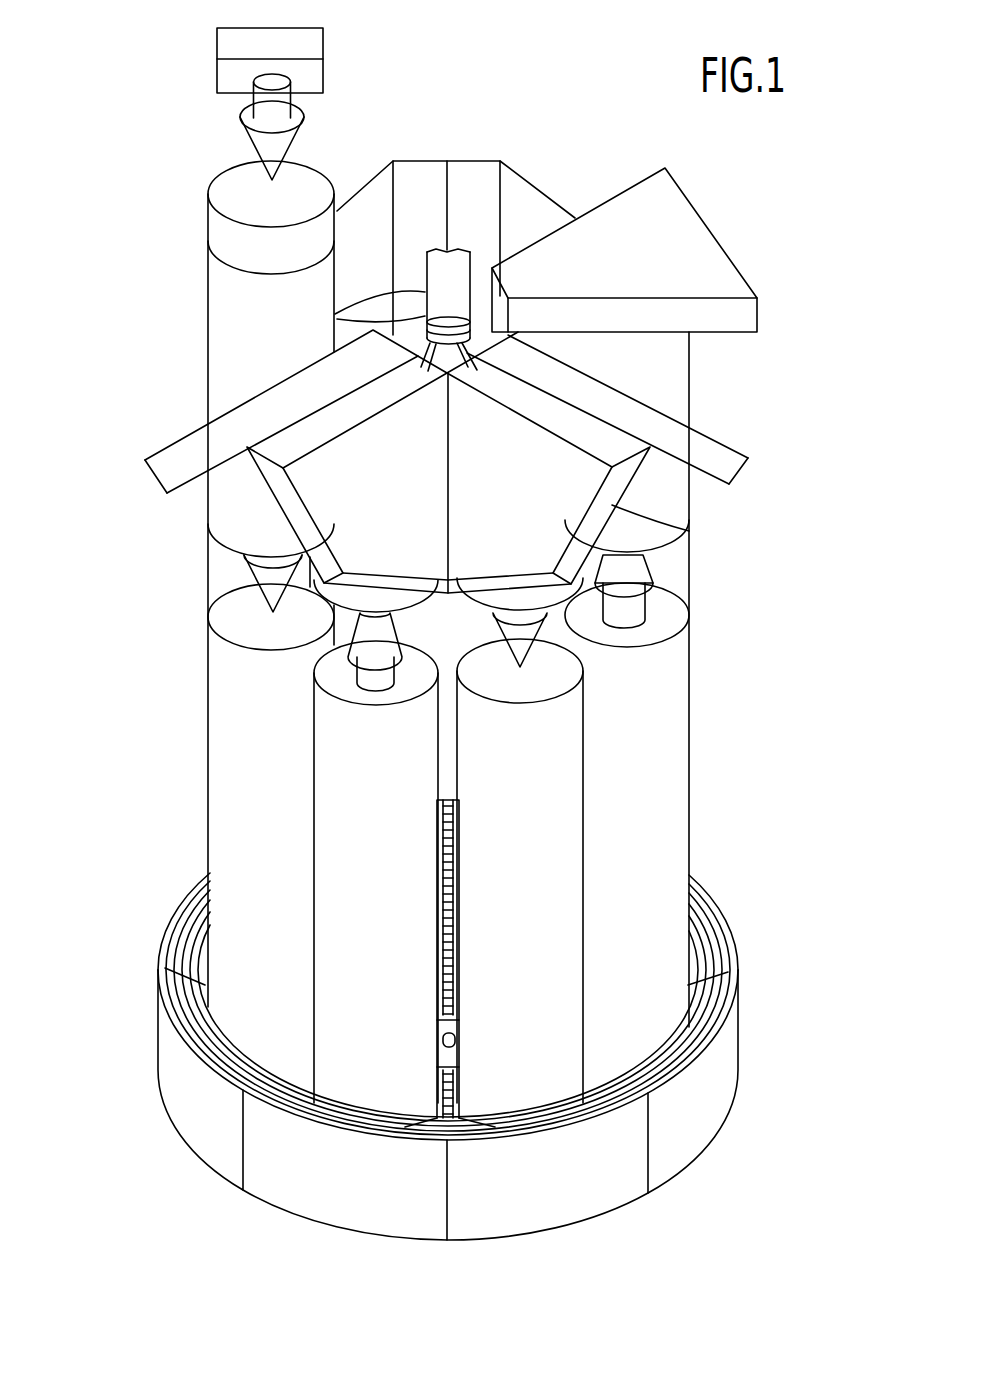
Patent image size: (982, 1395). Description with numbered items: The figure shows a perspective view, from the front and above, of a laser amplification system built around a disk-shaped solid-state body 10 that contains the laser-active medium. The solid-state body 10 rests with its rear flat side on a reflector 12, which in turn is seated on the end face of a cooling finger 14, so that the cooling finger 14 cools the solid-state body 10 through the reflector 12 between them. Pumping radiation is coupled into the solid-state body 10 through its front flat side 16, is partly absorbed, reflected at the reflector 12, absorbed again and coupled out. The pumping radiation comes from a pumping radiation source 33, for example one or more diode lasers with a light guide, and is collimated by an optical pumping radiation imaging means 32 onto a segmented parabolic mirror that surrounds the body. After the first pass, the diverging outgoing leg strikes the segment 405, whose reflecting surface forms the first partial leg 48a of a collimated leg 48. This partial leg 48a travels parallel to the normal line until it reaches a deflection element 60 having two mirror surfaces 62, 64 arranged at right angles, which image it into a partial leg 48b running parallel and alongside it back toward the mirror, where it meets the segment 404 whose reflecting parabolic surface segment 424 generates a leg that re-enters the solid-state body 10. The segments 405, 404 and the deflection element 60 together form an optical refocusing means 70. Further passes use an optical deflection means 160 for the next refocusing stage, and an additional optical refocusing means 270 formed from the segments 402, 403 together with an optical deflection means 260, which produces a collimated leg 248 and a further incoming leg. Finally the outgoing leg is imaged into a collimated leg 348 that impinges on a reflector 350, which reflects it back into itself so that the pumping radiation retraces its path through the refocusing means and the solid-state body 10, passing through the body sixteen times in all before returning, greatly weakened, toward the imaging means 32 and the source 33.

The solid-state body 10 is at (428, 371).
The reflector 12 is at (337, 314).
The cooling finger 14 is at (462, 252).
The front flat side 16 is at (477, 370).
The optical pumping radiation imaging means 32 is at (220, 237).
The pumping radiation source 33 is at (222, 72).
The collimated leg 48 is at (455, 840).
The first partial leg 48a is at (652, 792).
The partial leg 48b is at (556, 942).
The deflection element 60 is at (724, 430).
The mirror surface 62 is at (705, 480).
The mirror surface 64 is at (660, 527).
The optical refocusing means 70 is at (450, 1057).
The optical deflection means 160 is at (463, 177).
The collimated leg 248 is at (260, 682).
The optical deflection means 260 is at (245, 412).
The optical refocusing means 270 is at (292, 745).
The collimated leg 348 is at (673, 368).
The reflector 350 is at (723, 306).
The segment of the parabolic mirror 402 is at (193, 1087).
The segment of the parabolic mirror 403 is at (320, 1158).
The segment of the parabolic mirror 404 is at (568, 1185).
The segment of the parabolic mirror 405 is at (722, 1062).
The reflecting parabolic surface segment 424 is at (623, 1100).